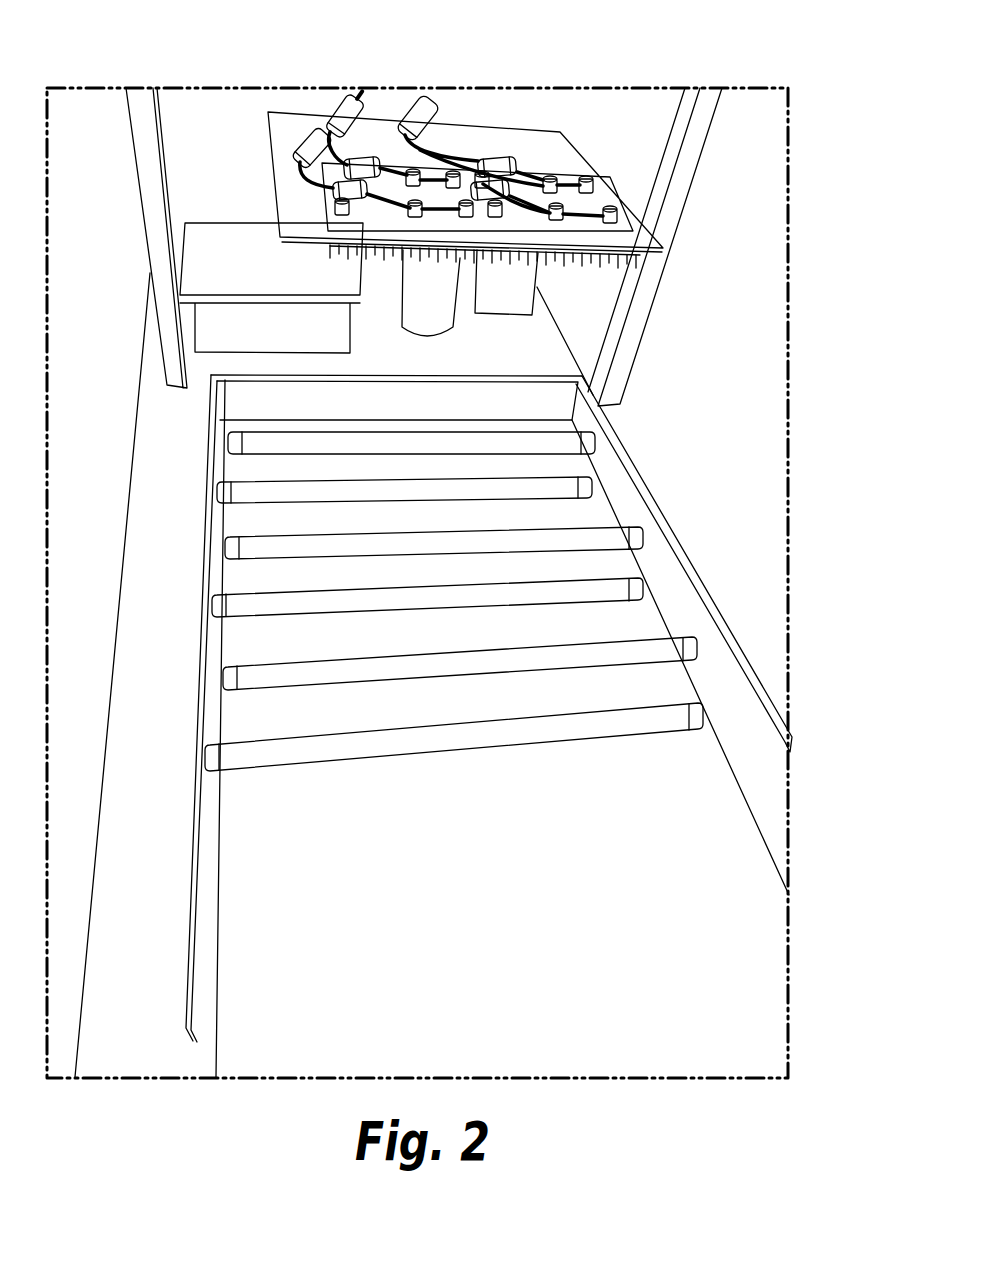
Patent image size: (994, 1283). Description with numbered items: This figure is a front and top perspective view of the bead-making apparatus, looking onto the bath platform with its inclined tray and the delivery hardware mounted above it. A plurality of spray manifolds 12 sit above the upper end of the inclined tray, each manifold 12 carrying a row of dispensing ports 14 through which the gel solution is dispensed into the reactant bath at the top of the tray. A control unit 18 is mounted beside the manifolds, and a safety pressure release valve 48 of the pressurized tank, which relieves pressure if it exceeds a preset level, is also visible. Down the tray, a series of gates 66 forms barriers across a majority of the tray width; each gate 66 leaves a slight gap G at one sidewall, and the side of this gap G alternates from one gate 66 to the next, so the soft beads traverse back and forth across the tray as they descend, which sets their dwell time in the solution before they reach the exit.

The spray manifold 12 is at (327, 213).
The dispensing port 14 is at (497, 254).
The control unit 18 is at (207, 242).
The safety pressure release valve 48 is at (400, 175).
The gate 66 is at (278, 442).
The gap G is at (225, 441).